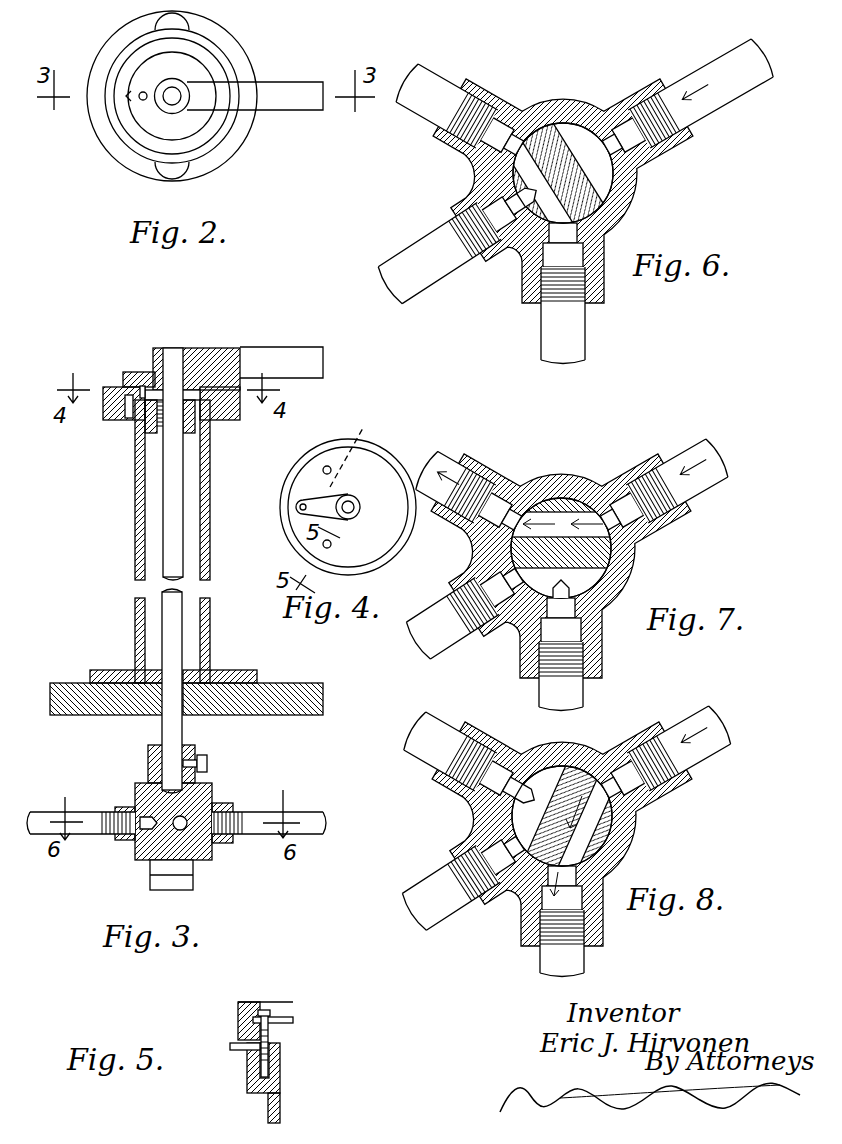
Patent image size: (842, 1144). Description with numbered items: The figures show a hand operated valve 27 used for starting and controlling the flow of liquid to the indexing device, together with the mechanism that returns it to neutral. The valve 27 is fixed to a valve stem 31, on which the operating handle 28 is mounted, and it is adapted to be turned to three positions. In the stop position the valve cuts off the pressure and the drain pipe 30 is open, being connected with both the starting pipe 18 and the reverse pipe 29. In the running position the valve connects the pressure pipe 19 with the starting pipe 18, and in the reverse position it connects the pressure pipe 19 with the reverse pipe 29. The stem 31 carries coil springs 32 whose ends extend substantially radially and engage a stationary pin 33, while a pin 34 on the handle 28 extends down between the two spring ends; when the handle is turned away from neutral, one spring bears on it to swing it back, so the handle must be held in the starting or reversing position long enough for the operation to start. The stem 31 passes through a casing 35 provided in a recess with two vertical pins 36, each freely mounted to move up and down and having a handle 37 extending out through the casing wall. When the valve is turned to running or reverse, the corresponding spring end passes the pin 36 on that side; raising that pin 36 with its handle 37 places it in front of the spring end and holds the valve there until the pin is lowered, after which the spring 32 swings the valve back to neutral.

In FIG. 3, the starting pipe 18 is at (100, 812).
In FIG. 6, the starting pipe 18 is at (430, 83).
In FIG. 7, the starting pipe 18 is at (450, 460).
In FIG. 8, the starting pipe 18 is at (433, 727).
In FIG. 3, the pressure pipe 19 is at (310, 812).
In FIG. 6, the pressure pipe 19 is at (725, 62).
In FIG. 7, the pressure pipe 19 is at (708, 452).
In FIG. 8, the pressure pipe 19 is at (697, 717).
In FIG. 3, the hand operated valve 27 is at (190, 798).
In FIG. 6, the hand operated valve 27 is at (580, 197).
In FIG. 7, the hand operated valve 27 is at (597, 555).
In FIG. 8, the hand operated valve 27 is at (580, 783).
In FIG. 2, the operating handle 28 is at (239, 84).
In FIG. 3, the operating handle 28 is at (280, 355).
In FIG. 6, the reverse pipe 29 is at (573, 325).
In FIG. 7, the reverse pipe 29 is at (582, 695).
In FIG. 8, the reverse pipe 29 is at (587, 957).
In FIG. 6, the drain pipe 30 is at (437, 257).
In FIG. 7, the drain pipe 30 is at (450, 627).
In FIG. 8, the drain pipe 30 is at (443, 897).
In FIG. 3, the valve stem 31 is at (172, 355).
In FIG. 4, the valve stem 31 is at (352, 500).
In FIG. 3, the coil springs 32 is at (150, 425).
In FIG. 5, the coil springs 32 is at (285, 1018).
In FIG. 3, the stationary pin 33 is at (128, 418).
In FIG. 4, the stationary pin 33 is at (303, 500).
In FIG. 2, the pin 34 is at (145, 92).
In FIG. 3, the pin 34 is at (142, 388).
In FIG. 4, the pin 34 is at (360, 448).
In FIG. 3, the casing 35 is at (210, 497).
In FIG. 5, the casing 35 is at (270, 1110).
In FIG. 4, the vertical pins 36 is at (327, 466).
In FIG. 5, the vertical pins 36 is at (265, 1012).
In FIG. 5, the handle 37 is at (238, 1050).